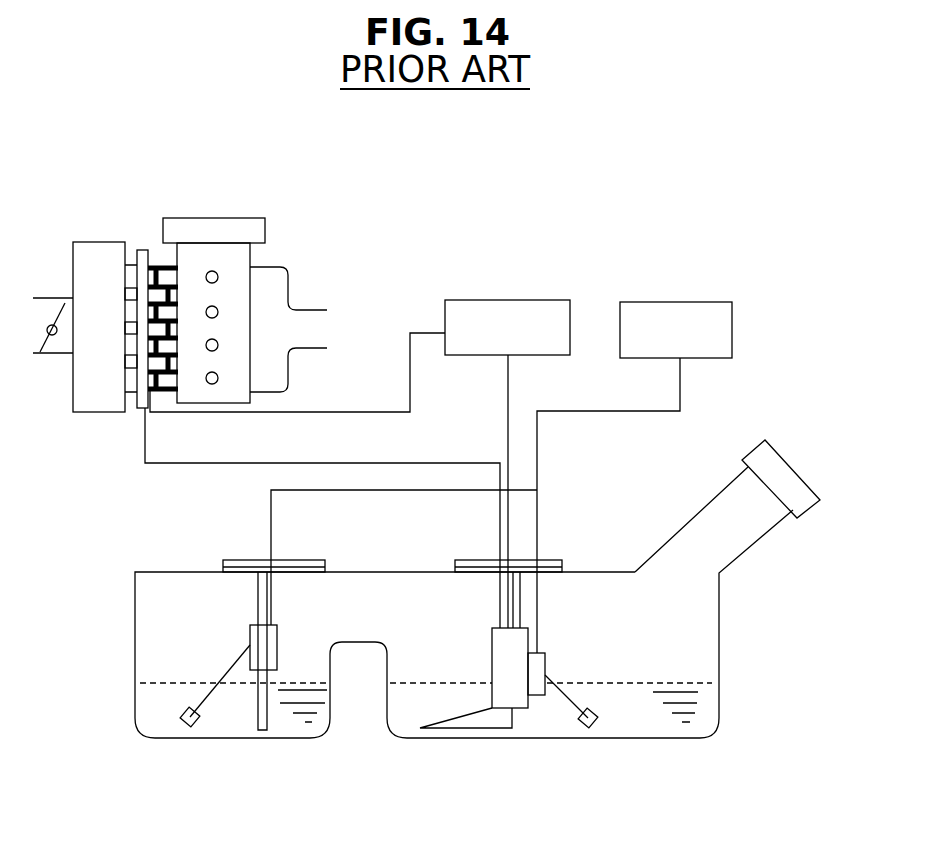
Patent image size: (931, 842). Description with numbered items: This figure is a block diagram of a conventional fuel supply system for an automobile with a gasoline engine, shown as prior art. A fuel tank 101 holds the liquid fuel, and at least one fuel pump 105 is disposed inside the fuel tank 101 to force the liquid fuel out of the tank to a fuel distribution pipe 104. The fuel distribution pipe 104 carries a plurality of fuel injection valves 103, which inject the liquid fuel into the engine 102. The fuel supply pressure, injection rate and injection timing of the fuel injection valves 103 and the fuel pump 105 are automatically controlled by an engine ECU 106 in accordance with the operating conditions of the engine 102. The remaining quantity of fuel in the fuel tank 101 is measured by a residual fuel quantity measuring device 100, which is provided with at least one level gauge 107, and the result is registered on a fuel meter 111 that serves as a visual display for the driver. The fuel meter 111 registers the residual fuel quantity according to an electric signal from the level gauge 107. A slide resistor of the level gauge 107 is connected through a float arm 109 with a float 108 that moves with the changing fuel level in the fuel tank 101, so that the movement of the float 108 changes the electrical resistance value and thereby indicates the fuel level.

The residual fuel quantity measuring device 100 is at (725, 220).
The fuel tank 101 is at (158, 568).
The engine 102 is at (220, 228).
The fuel injection valves 103 is at (157, 273).
The fuel distribution pipe 104 is at (143, 252).
The fuel pump 105 is at (505, 690).
The engine ECU 106 is at (507, 300).
The level gauge 107 is at (266, 660).
The float 108 is at (183, 724).
The float arm 109 is at (213, 693).
The fuel meter 111 is at (676, 303).